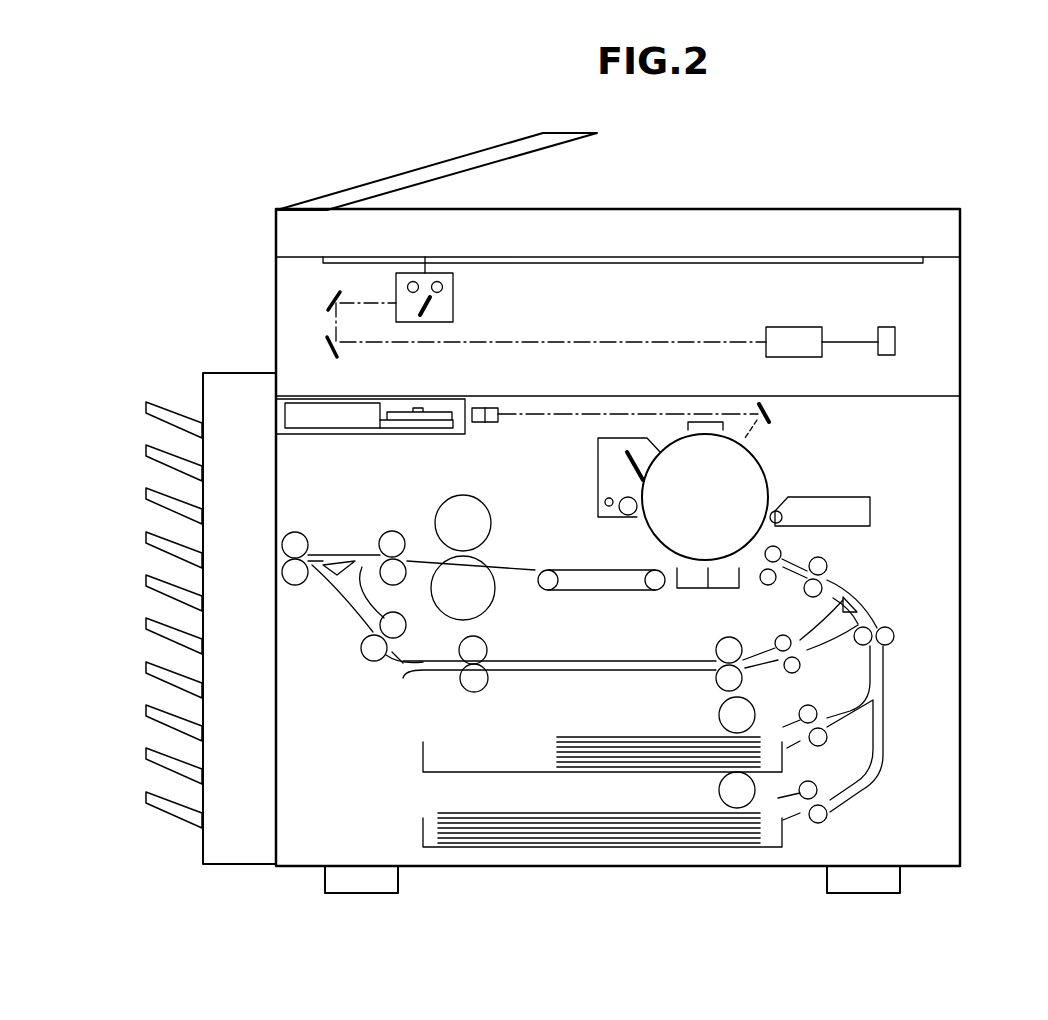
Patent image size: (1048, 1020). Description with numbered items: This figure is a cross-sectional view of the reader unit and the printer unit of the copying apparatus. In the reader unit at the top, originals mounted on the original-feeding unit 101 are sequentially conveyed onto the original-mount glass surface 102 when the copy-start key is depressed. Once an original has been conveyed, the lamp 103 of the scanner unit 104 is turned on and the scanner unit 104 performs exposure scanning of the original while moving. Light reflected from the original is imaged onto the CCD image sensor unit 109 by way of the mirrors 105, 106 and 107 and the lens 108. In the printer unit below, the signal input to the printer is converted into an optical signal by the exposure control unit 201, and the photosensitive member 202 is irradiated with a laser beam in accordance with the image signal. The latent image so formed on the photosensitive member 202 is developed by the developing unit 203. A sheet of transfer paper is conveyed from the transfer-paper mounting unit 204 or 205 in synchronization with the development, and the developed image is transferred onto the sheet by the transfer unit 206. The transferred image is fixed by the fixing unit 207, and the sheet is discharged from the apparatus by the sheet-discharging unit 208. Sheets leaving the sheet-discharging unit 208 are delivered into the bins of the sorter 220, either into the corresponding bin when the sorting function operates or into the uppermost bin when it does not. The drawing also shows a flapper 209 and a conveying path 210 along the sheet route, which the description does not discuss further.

The original-feeding unit 101 is at (377, 182).
The original-mount glass surface 102 is at (905, 262).
The lamp 103 is at (437, 282).
The scanner unit 104 is at (455, 290).
The mirror 105 is at (455, 306).
The mirror 106 is at (333, 297).
The mirror 107 is at (330, 343).
The lens 108 is at (808, 328).
The CCD image sensor unit 109 is at (895, 340).
The exposure control unit 201 is at (397, 410).
The photosensitive member 202 is at (763, 478).
The developing unit 203 is at (870, 512).
The transfer-paper mounting unit 204 is at (765, 760).
The transfer-paper mounting unit 205 is at (762, 837).
The transfer unit 206 is at (708, 580).
The fixing unit 207 is at (458, 588).
The sheet-discharging unit 208 is at (283, 563).
The path switching flapper 209 is at (326, 580).
The paper conveying path 210 is at (578, 671).
The sorter 220 is at (220, 839).